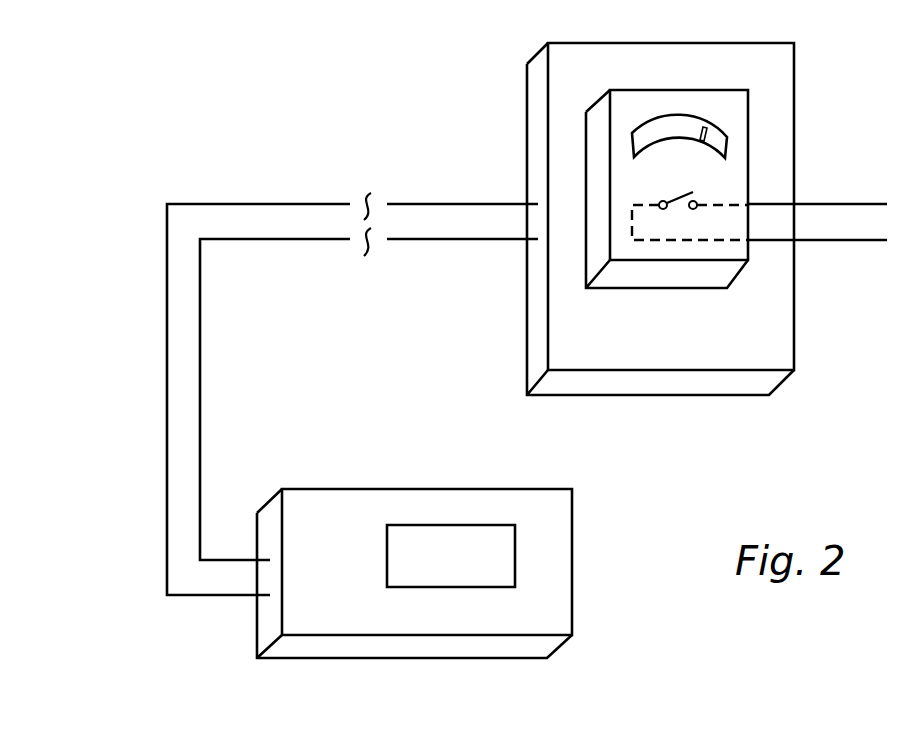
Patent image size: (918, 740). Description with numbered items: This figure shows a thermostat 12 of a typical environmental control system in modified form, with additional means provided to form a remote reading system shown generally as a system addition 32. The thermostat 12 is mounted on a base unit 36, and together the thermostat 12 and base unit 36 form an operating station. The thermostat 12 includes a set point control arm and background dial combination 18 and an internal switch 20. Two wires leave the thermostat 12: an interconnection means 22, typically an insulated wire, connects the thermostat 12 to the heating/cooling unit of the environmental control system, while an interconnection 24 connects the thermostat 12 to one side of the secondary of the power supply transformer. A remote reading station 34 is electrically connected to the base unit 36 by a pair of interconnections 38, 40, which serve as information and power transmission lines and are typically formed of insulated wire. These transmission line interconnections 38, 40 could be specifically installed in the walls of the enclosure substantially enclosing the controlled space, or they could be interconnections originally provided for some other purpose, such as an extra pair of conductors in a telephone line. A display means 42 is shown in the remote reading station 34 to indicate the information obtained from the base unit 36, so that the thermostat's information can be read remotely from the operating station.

The system addition 32 is at (163, 117).
The base unit 36 is at (525, 92).
The thermostat 12 is at (632, 87).
The set point control arm and background dial combination 18 is at (697, 112).
The internal switch 20 is at (678, 195).
The interconnection 24 is at (823, 203).
The interconnection means 22 is at (823, 240).
The interconnection 38 is at (165, 398).
The interconnection 40 is at (200, 397).
The remote reading station 34 is at (248, 612).
The display means 42 is at (387, 563).